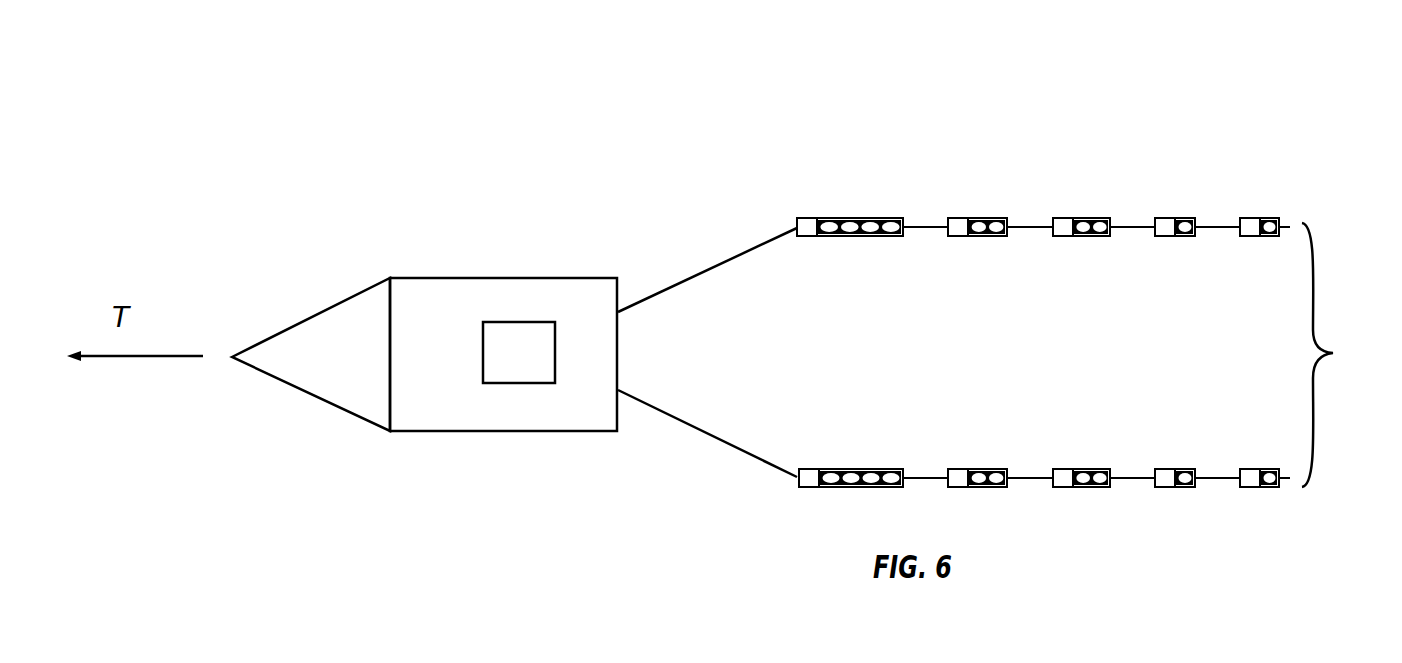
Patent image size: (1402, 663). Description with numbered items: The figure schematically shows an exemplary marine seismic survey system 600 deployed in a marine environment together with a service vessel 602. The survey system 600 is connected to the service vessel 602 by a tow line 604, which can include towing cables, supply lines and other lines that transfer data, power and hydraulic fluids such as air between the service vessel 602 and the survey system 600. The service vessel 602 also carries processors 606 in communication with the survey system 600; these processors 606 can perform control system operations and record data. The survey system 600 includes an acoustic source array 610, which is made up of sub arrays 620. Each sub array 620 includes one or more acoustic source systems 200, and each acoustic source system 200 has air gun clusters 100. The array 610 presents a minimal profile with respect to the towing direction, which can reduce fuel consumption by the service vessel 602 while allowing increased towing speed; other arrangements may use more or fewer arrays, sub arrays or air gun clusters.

The marine seismic survey system 600 is at (896, 66).
The service vessel 602 is at (369, 261).
The tow line 604 is at (715, 265).
The processors 606 is at (513, 336).
The acoustic source system 200 is at (1023, 334).
The air gun cluster 100 is at (865, 218).
The sub array 620 is at (1070, 266).
The acoustic source array 610 is at (1343, 355).